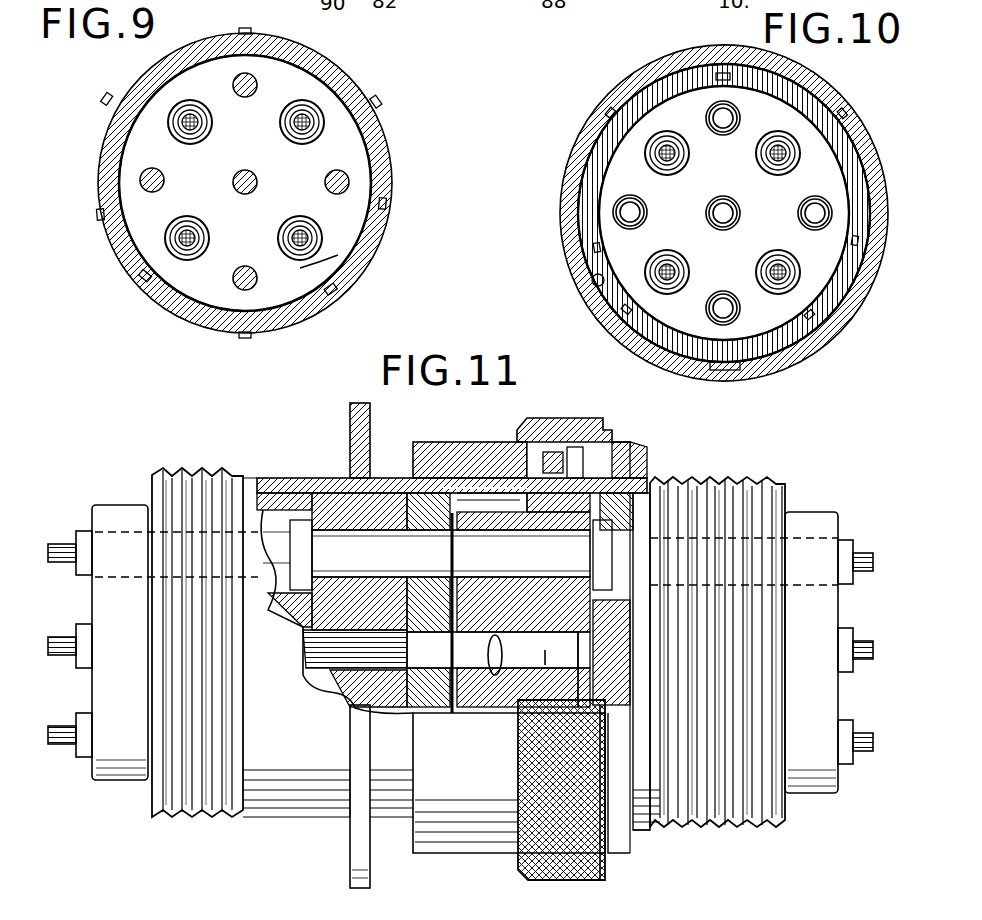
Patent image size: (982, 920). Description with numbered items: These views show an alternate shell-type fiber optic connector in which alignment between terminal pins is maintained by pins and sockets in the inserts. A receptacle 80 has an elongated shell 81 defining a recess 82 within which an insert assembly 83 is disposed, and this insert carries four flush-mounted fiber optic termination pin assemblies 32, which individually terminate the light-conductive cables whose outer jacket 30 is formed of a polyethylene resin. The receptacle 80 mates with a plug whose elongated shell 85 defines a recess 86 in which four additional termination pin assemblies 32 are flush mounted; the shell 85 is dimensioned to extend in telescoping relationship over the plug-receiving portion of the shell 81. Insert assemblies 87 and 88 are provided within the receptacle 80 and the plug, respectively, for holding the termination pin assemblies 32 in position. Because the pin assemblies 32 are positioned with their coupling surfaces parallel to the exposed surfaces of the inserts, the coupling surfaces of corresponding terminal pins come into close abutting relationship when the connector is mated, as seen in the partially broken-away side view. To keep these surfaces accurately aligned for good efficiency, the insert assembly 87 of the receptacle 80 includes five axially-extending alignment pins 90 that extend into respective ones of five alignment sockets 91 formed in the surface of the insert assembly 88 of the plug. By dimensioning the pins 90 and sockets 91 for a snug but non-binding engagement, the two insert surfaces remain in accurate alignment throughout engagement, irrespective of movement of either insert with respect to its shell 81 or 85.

In FIG. 11, the outer jacket 30 is at (82, 540).
In FIG. 11, the terminating pin assemblies 32 is at (327, 553).
In FIG. 11, the receptacle 80 is at (348, 437).
In FIG. 9, the elongated shell 81 is at (380, 230).
In FIG. 11, the elongated shell 81 is at (268, 483).
In FIG. 9, the recess 82 is at (338, 255).
In FIG. 11, the recess 82 is at (468, 495).
In FIG. 9, the insert assembly 83 is at (355, 148).
In FIG. 11, the insert assembly 83 is at (427, 490).
In FIG. 10, the elongated shell 85 is at (627, 85).
In FIG. 11, the elongated shell 85 is at (633, 485).
In FIG. 10, the recess 86 is at (600, 280).
In FIG. 11, the recess 86 is at (543, 433).
In FIG. 11, the insert assembly 87 is at (350, 696).
In FIG. 10, the insert assembly 88 is at (620, 173).
In FIG. 11, the insert assembly 88 is at (470, 693).
In FIG. 9, the alignment pins 90 is at (152, 177).
In FIG. 11, the alignment pins 90 is at (537, 697).
In FIG. 10, the alignment sockets 91 is at (797, 213).
In FIG. 11, the alignment sockets 91 is at (495, 695).